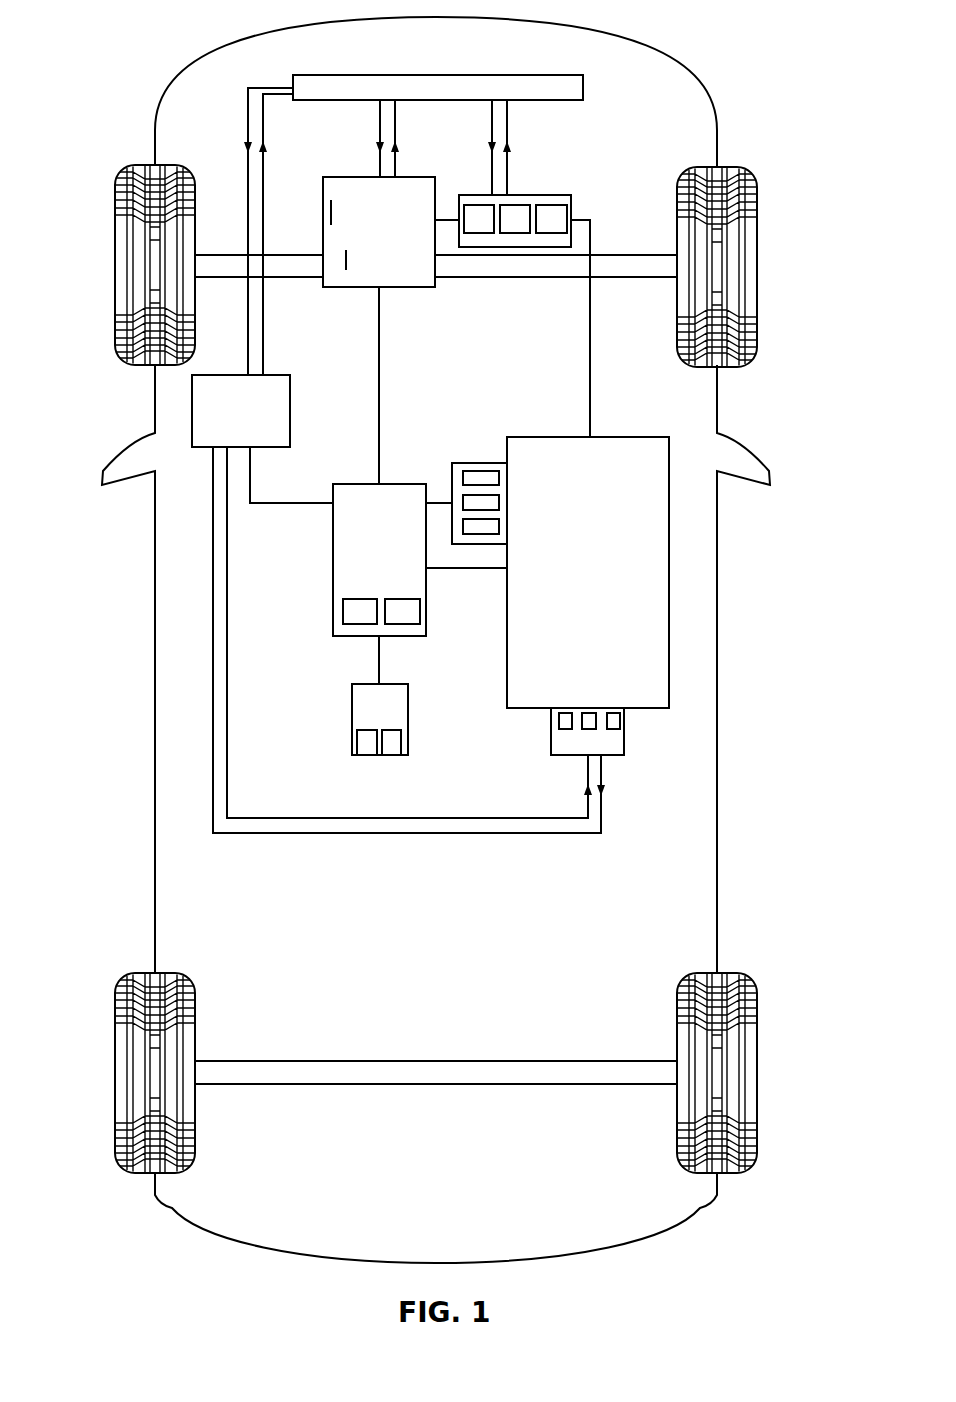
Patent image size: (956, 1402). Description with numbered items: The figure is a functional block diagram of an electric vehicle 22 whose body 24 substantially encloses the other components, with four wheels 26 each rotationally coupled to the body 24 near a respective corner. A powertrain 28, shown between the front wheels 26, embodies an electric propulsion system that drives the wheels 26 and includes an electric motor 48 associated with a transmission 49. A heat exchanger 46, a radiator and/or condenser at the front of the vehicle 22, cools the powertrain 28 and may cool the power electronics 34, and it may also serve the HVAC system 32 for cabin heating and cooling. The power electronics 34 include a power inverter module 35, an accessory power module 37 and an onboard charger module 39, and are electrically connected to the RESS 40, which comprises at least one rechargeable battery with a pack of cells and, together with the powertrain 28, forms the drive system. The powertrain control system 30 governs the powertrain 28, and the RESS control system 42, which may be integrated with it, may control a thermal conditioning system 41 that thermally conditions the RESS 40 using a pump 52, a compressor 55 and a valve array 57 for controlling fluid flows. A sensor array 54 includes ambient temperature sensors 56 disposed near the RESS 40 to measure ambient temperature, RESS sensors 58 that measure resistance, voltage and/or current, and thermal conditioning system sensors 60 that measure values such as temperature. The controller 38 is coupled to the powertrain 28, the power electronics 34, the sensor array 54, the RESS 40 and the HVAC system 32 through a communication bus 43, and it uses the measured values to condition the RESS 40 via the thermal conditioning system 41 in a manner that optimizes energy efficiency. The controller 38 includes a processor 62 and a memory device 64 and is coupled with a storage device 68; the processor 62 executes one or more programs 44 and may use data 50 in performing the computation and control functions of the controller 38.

The vehicle 22 is at (683, 38).
The body 24 is at (150, 716).
The wheels 26 is at (113, 265).
The powertrain 28 is at (346, 168).
The powertrain control system 30 is at (341, 356).
The HVAC system 32 is at (254, 423).
The power electronics 34 is at (528, 192).
The power inverter module 35 is at (490, 229).
The accessory power module 37 is at (526, 229).
The onboard charger module 39 is at (562, 229).
The controller 38 is at (391, 572).
The RESS 40 is at (601, 582).
The thermal conditioning system 41 is at (624, 757).
The RESS control system 42 is at (438, 390).
The bus 43 is at (376, 414).
The programs 44 is at (405, 748).
The heat exchanger 46 is at (508, 76).
The electric motor 48 is at (331, 213).
The transmission 49 is at (346, 262).
The data 50 is at (360, 750).
The pump 52 is at (615, 722).
The sensor array 54 is at (452, 549).
The compressor 55 is at (560, 724).
The ambient temperature sensors 56 is at (486, 470).
The valve array 57 is at (582, 731).
The RESS sensors 58 is at (470, 498).
The thermal conditioning system sensors 60 is at (478, 538).
The processor 62 is at (355, 622).
The memory device 64 is at (396, 620).
The storage device 68 is at (393, 725).